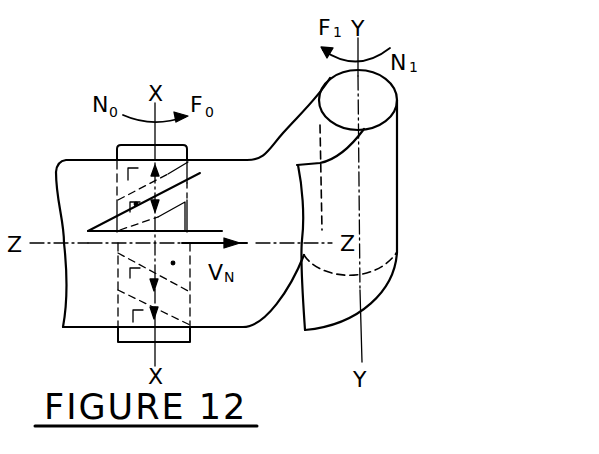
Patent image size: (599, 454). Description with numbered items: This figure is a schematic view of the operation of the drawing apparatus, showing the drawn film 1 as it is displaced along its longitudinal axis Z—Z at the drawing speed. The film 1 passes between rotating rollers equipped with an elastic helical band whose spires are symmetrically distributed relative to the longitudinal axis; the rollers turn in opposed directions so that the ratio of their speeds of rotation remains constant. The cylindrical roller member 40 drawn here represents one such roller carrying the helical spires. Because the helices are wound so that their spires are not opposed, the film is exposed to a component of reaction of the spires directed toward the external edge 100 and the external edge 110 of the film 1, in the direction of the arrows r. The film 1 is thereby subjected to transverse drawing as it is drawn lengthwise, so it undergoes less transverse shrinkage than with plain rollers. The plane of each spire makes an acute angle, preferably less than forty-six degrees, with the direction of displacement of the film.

The drawn film 1 is at (78, 286).
The external edge of the drawn film 100 is at (220, 174).
The external edge of the drawn film 110 is at (208, 317).
The cutter / tool member 40 is at (118, 333).